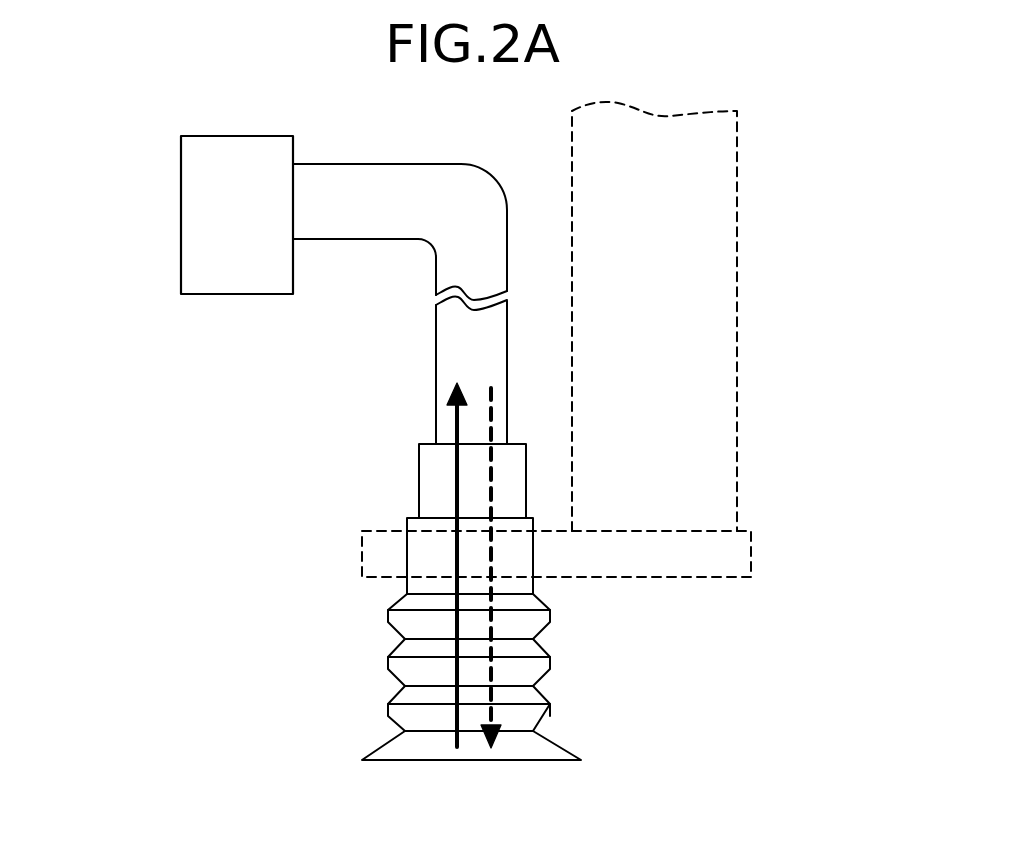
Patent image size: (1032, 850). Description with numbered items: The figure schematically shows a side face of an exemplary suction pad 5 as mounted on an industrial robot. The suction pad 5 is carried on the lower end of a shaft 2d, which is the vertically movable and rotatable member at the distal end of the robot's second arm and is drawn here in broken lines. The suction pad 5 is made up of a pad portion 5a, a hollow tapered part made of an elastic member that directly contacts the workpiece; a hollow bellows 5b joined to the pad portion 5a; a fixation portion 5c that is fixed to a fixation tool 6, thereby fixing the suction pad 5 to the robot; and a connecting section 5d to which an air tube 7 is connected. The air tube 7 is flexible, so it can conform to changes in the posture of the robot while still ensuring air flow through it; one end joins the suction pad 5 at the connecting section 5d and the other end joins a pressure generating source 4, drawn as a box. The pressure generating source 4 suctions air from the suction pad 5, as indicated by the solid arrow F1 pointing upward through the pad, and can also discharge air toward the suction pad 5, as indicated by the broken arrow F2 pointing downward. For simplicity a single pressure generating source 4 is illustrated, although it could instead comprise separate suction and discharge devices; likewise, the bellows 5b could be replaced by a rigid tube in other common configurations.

The pressure generating source 4 is at (181, 203).
The air tube 7 is at (436, 333).
The suction pad 5 is at (387, 598).
The pad portion 5a is at (382, 750).
The bellows 5b is at (405, 641).
The fixation portion 5c is at (407, 528).
The connecting section 5d is at (419, 462).
The shaft 2d is at (737, 307).
The fixation tool 6 is at (751, 552).
The arrow indicating suction of air F1 is at (457, 415).
The arrow indicating discharge of air F2 is at (492, 415).